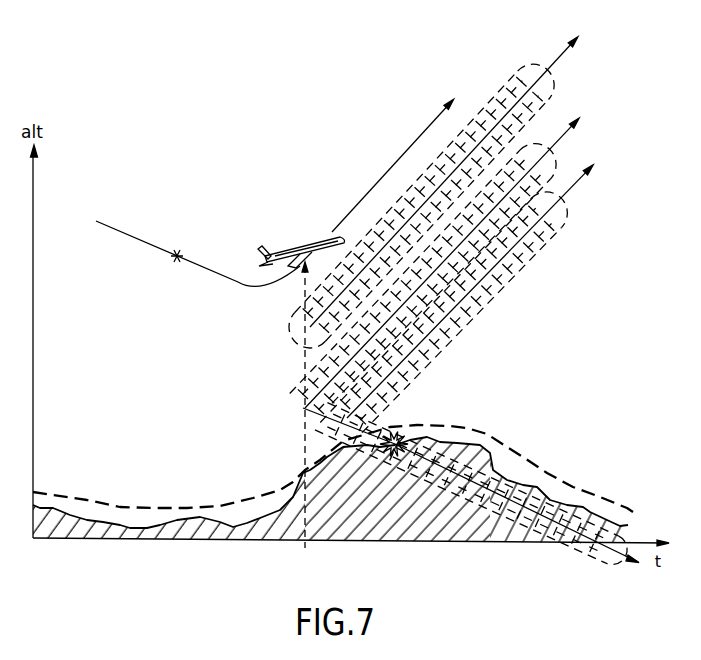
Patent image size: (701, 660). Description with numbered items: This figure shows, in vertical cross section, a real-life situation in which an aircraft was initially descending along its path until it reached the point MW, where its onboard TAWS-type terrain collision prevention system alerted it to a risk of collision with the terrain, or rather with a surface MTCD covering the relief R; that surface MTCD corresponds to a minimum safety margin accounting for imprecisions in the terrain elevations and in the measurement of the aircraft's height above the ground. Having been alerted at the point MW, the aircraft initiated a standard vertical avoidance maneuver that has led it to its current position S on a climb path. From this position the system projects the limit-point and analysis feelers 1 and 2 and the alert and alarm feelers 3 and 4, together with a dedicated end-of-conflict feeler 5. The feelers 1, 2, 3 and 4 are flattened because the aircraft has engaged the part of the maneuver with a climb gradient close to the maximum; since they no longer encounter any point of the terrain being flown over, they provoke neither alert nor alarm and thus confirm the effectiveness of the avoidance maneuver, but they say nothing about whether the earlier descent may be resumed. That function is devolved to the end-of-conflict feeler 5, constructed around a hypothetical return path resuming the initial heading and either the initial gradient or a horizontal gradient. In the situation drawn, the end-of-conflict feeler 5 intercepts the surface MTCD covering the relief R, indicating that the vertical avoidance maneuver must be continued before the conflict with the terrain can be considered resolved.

The limit-point feeler 1 is at (436, 189).
The analysis feeler 2 is at (533, 64).
The alert feeler 3 is at (560, 211).
The alarm feeler 4 is at (535, 149).
The end-of-conflict feeler 5 is at (570, 546).
The current position of the aircraft S is at (315, 245).
The alert point of the path MW is at (198, 253).
The relief R is at (472, 444).
The safety margin surface MTCD is at (520, 458).